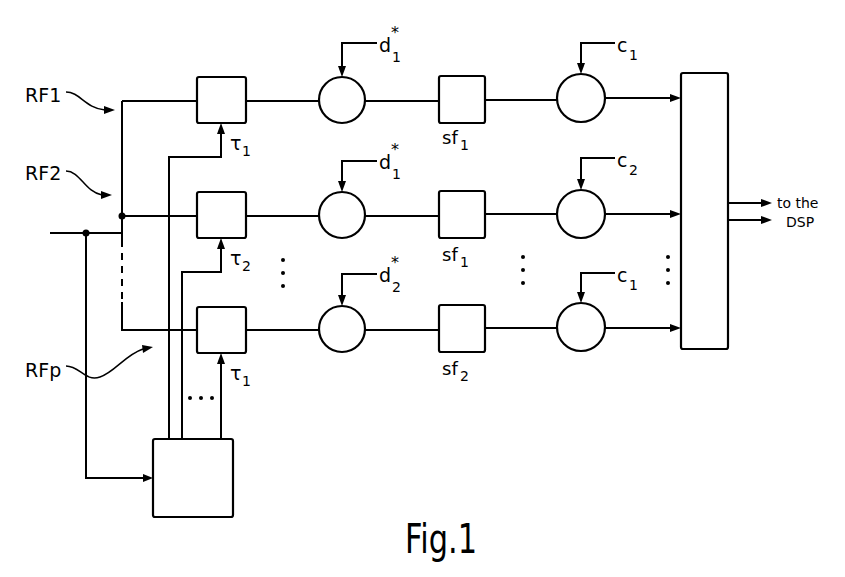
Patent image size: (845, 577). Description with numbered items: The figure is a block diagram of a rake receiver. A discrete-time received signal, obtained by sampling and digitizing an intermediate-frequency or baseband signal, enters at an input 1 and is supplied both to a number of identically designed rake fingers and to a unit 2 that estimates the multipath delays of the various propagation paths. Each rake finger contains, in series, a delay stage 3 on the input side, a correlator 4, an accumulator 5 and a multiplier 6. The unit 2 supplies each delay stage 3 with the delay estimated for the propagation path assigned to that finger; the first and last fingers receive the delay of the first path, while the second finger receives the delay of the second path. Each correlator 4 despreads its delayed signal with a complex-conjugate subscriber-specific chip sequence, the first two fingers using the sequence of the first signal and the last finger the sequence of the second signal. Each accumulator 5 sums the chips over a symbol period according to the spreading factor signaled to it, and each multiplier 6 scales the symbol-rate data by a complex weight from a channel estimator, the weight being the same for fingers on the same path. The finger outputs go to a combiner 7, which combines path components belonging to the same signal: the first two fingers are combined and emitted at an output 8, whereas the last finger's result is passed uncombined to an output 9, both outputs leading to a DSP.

The input 1 is at (62, 235).
The unit for estimation of the delays 2 is at (193, 478).
The delay stage 3 is at (221, 215).
The correlator 4 is at (342, 214).
The accumulator 5 is at (462, 214).
The multiplier 6 is at (581, 212).
The combiner 7 is at (704, 211).
The output 8 is at (742, 201).
The output 9 is at (742, 222).